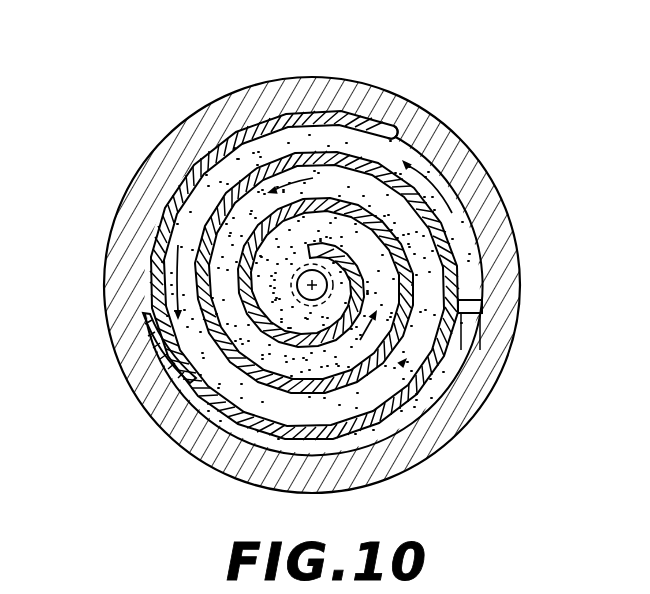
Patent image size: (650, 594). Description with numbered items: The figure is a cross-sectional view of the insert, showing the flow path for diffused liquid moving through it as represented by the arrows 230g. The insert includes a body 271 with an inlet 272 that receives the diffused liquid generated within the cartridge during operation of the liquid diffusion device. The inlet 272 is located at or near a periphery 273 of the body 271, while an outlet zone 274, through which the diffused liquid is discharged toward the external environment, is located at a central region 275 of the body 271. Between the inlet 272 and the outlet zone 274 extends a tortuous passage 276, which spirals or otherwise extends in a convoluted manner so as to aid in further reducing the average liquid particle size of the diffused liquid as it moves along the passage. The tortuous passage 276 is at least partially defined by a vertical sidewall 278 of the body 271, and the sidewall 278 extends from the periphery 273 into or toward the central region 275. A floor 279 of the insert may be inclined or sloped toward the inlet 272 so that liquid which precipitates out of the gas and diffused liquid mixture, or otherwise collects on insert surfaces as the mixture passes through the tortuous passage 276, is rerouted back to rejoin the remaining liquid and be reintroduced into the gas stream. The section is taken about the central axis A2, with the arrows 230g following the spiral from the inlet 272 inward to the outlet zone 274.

The body 271 is at (130, 297).
The inlet 272 is at (472, 271).
The periphery 273 is at (500, 192).
The outlet zone 274 is at (296, 295).
The central region 275 is at (241, 334).
The tortuous passage 276 is at (279, 135).
The vertical sidewall 278 is at (396, 137).
The floor 279 is at (263, 273).
The flow path arrows 230g is at (286, 282).
The axis A2 is at (316, 292).